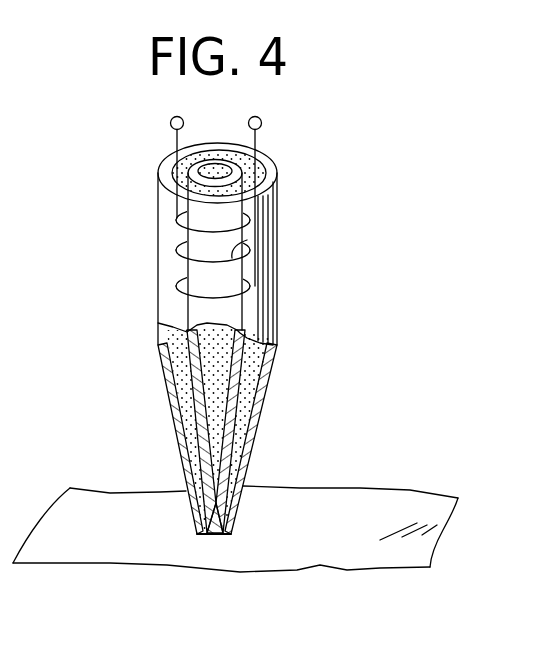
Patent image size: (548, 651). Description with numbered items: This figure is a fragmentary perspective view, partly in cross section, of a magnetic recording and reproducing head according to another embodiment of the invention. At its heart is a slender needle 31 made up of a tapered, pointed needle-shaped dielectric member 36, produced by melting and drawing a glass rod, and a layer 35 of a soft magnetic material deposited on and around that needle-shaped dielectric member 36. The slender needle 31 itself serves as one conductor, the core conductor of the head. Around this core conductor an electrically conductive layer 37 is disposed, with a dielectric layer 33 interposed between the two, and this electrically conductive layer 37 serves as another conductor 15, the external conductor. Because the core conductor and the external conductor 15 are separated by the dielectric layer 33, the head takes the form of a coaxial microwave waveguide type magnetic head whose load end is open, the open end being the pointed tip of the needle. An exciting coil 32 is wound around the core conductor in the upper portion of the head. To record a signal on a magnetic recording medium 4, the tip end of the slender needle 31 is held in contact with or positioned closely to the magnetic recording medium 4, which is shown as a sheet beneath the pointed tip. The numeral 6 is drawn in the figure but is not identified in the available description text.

The magnetic recording medium 4 is at (407, 507).
The outer tube 6 is at (273, 344).
The external conductor 15 is at (290, 442).
The slender needle 31 is at (200, 534).
The exciting coil 32 is at (223, 260).
The dielectric layer 33 is at (178, 398).
The layer of soft magnetic material 35 is at (188, 360).
The needle-shaped dielectric member 36 is at (217, 410).
The electrically conductive layer 37 is at (173, 443).